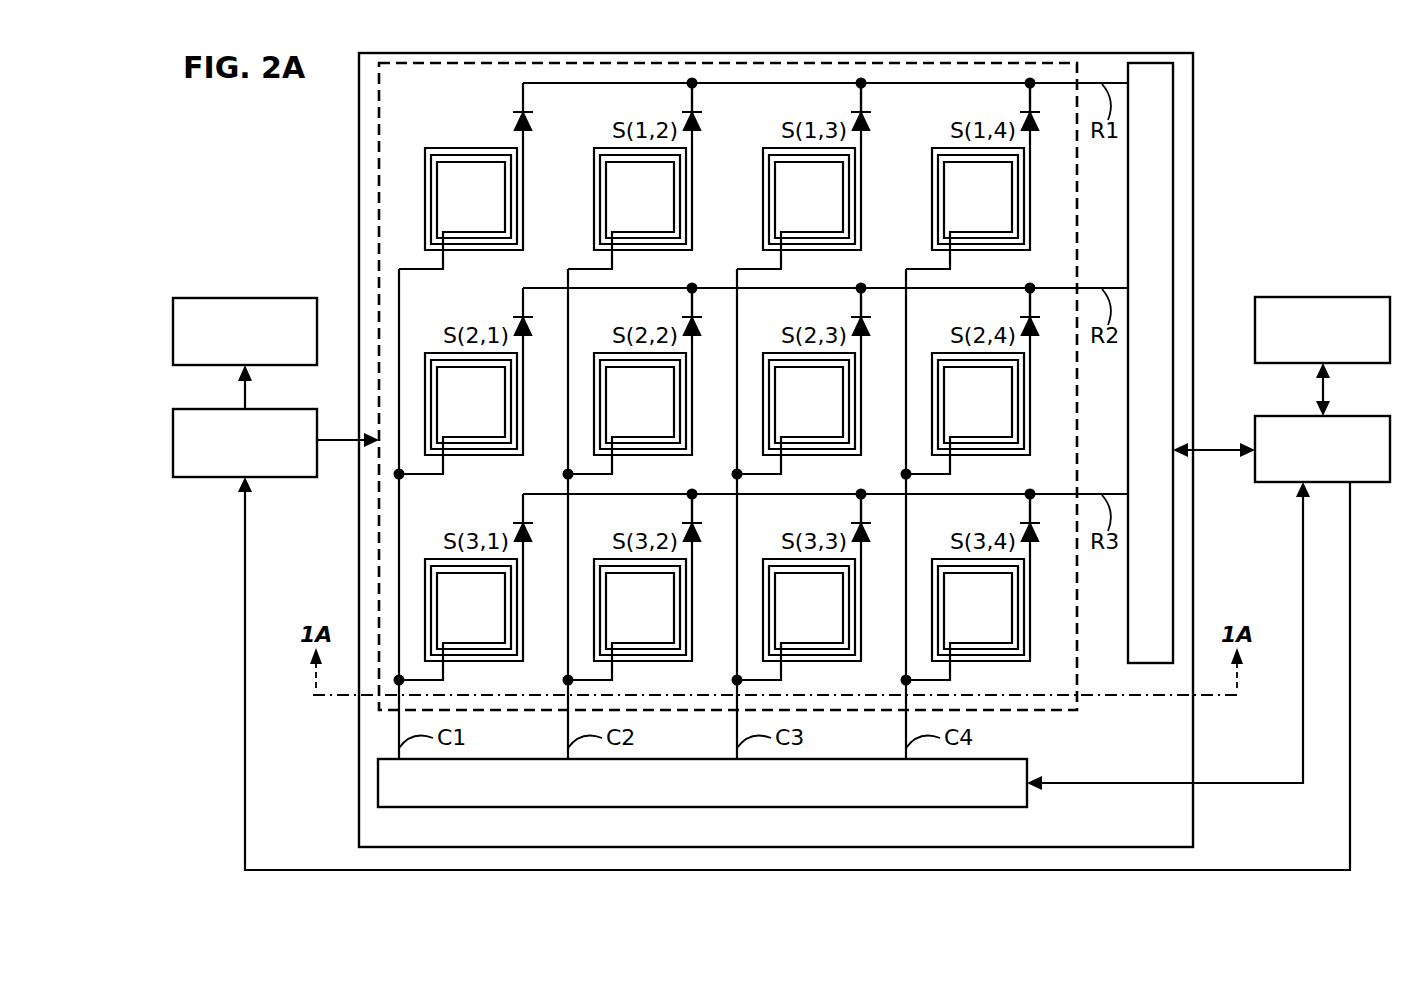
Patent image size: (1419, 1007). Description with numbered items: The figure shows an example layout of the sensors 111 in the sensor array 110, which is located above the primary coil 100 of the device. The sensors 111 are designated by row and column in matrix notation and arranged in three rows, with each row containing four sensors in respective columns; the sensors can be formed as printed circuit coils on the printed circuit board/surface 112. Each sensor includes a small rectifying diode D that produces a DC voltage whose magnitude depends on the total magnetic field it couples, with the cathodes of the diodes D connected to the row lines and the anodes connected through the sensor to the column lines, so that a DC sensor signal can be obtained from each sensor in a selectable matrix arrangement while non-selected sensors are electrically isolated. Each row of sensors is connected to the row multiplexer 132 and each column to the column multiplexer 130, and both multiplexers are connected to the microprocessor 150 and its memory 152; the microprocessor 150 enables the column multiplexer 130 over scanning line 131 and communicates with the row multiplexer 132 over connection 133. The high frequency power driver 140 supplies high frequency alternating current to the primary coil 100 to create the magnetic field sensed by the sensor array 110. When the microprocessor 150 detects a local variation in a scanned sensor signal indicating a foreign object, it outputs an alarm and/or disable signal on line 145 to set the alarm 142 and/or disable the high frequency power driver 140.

The sensor array 110 is at (265, 132).
The sensors 111 is at (512, 173).
The printed circuit board/surface 112 is at (1250, 122).
The primary coil 100 is at (379, 195).
The rectifying diode D is at (640, 103).
The column multiplexer 130 is at (1000, 810).
The scanning line 131 is at (1303, 730).
The row multiplexer 132 is at (1174, 203).
The scanning line 133 is at (1231, 445).
The high frequency power driver 140 is at (245, 443).
The alarm 142 is at (245, 331).
The alarm and/or disable signal line 145 is at (1350, 812).
The microprocessor 150 is at (1322, 449).
The memory 152 is at (1322, 330).